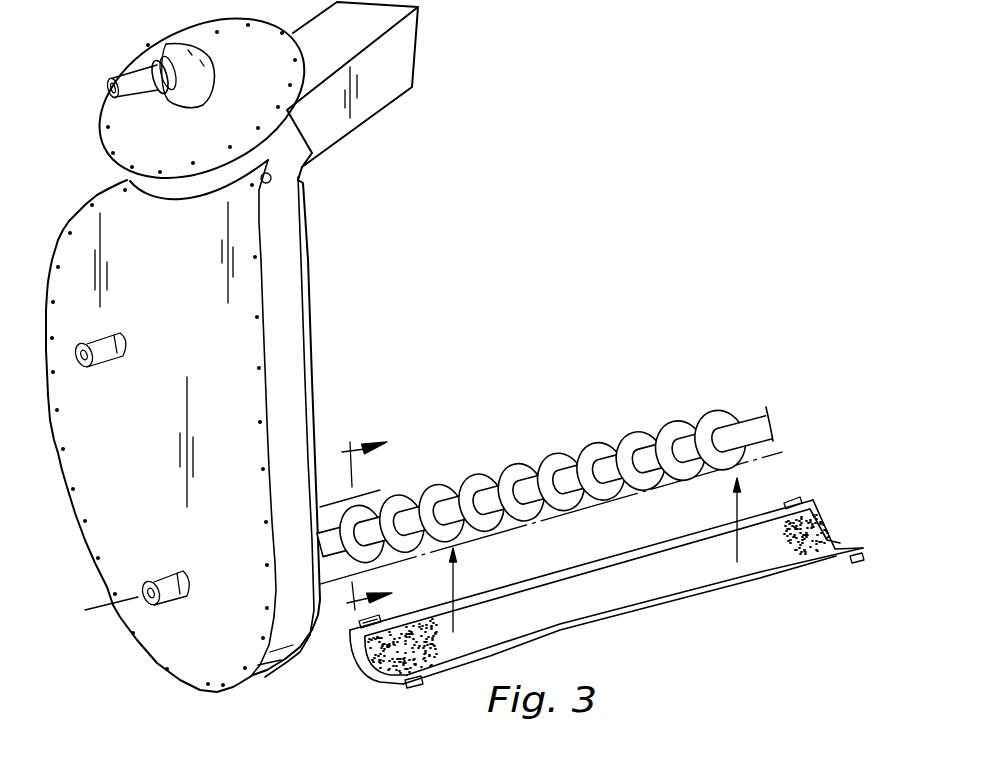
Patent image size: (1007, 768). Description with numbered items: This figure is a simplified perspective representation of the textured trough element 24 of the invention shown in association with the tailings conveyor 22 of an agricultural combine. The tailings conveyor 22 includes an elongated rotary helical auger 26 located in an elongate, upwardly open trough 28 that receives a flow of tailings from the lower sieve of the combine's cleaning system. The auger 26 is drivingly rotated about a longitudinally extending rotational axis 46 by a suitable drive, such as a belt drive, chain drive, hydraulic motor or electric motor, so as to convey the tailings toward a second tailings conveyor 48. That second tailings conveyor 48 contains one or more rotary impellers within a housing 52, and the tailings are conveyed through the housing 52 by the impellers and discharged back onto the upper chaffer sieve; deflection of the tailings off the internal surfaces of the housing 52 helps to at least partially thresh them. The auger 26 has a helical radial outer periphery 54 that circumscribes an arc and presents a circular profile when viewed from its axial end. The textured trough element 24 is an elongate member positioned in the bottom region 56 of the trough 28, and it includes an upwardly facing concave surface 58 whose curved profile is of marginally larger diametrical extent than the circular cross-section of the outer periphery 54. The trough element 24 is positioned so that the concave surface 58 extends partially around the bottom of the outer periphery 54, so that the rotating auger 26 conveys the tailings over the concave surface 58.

The tailings conveyor 22 is at (783, 352).
The textured trough element 24 is at (643, 565).
The rotary helical auger 26 is at (602, 440).
The trough 28 is at (800, 568).
The rotational axis 46 is at (778, 422).
The second tailings conveyor 48 is at (242, 346).
The housing 52 is at (313, 396).
The helical radial outer periphery 54 is at (517, 463).
The bottom region of trough 56 is at (758, 521).
The concave surface 58 is at (838, 535).